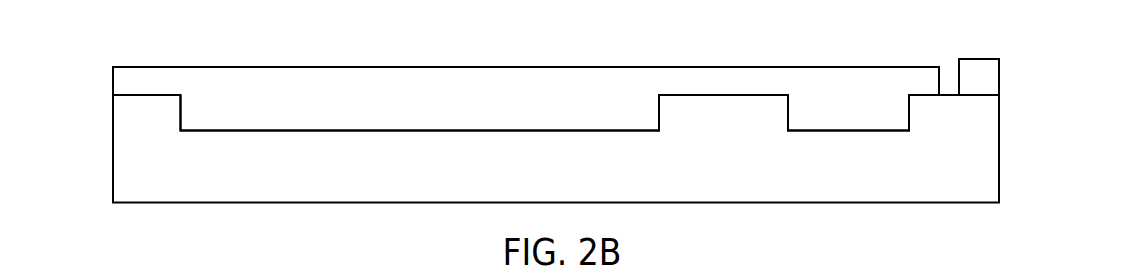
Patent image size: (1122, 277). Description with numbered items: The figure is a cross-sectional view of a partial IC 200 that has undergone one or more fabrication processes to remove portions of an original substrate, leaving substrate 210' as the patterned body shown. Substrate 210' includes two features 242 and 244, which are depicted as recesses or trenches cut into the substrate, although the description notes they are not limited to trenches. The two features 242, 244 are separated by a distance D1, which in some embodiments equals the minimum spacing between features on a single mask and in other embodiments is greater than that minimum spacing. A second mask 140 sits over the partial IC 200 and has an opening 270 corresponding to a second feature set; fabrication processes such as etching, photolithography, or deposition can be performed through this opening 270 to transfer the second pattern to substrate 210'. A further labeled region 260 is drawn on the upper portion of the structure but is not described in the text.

The partial IC 200 is at (575, 101).
The substrate 210' is at (556, 135).
The top layer 260 is at (491, 100).
The second mask 140 is at (964, 89).
The opening 270 is at (947, 68).
The feature 242 is at (658, 115).
The feature 244 is at (789, 115).
The distance D1 is at (723, 84).